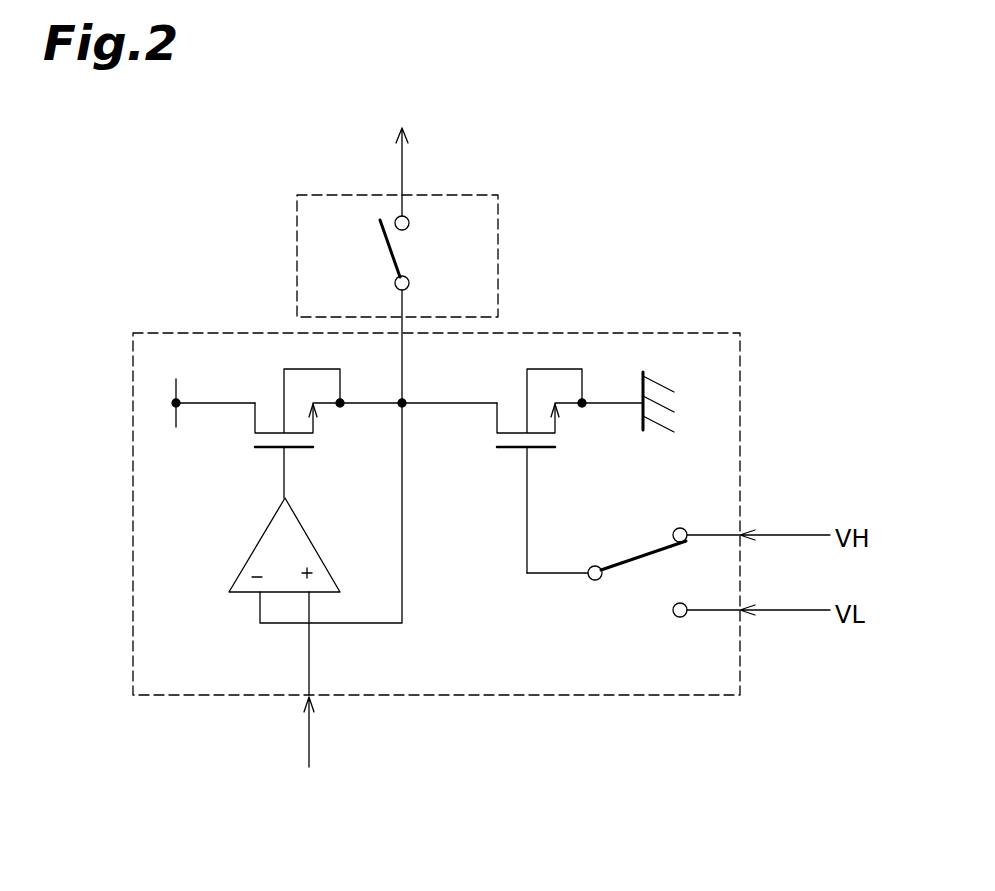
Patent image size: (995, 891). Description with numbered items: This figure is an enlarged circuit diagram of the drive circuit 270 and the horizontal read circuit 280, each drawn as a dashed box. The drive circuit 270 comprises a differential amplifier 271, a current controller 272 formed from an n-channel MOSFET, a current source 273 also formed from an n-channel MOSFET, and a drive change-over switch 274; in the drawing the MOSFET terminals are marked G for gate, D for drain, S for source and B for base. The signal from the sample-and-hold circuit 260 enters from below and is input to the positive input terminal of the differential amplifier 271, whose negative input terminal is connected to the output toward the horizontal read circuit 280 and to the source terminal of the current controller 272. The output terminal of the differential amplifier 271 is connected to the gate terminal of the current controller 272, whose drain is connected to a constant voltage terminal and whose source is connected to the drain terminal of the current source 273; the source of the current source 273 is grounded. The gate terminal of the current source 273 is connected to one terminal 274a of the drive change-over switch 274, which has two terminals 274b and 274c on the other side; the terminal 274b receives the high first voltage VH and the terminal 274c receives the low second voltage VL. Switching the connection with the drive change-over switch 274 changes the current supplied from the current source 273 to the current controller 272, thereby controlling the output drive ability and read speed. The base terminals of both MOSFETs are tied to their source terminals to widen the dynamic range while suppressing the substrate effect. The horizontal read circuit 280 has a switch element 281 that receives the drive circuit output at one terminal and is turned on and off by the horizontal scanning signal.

The sample-and-hold circuit 260 is at (304, 750).
The drive circuit 270 is at (740, 405).
The differential amplifier 271 is at (247, 563).
The current controller 272 is at (267, 448).
The current source 273 is at (508, 452).
The drive change-over switch 274 is at (621, 571).
The terminal 274a is at (592, 580).
The terminal 274b is at (678, 528).
The terminal 274c is at (682, 618).
The horizontal read circuit 280 is at (498, 264).
The switch element 281 is at (388, 248).